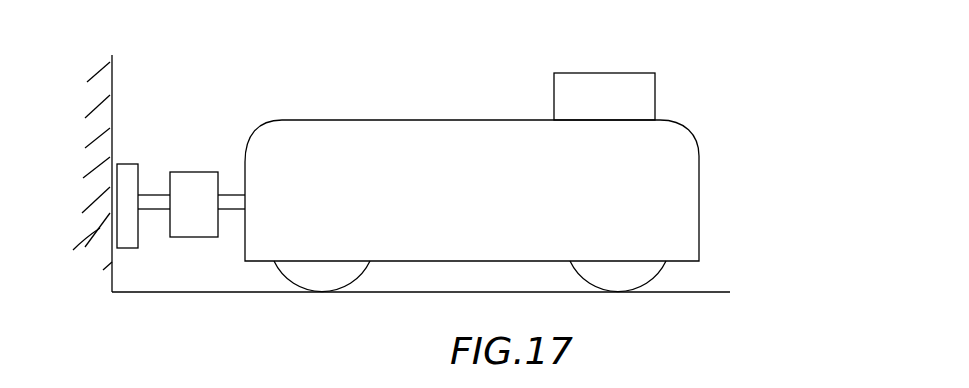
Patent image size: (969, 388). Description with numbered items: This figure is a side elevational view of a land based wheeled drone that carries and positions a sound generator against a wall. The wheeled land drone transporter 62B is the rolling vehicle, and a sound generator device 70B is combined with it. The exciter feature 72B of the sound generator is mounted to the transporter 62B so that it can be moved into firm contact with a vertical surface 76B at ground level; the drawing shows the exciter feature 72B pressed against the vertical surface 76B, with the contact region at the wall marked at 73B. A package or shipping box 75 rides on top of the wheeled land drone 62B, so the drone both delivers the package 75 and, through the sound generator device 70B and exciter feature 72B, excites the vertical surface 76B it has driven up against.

The wheeled land drone transporter 62B is at (415, 115).
The sound generator device 70B is at (157, 155).
The exciter feature 72B is at (127, 248).
The contact point 73B is at (110, 265).
The package or shipping box 75 is at (583, 82).
The vertical surface 76B is at (112, 78).